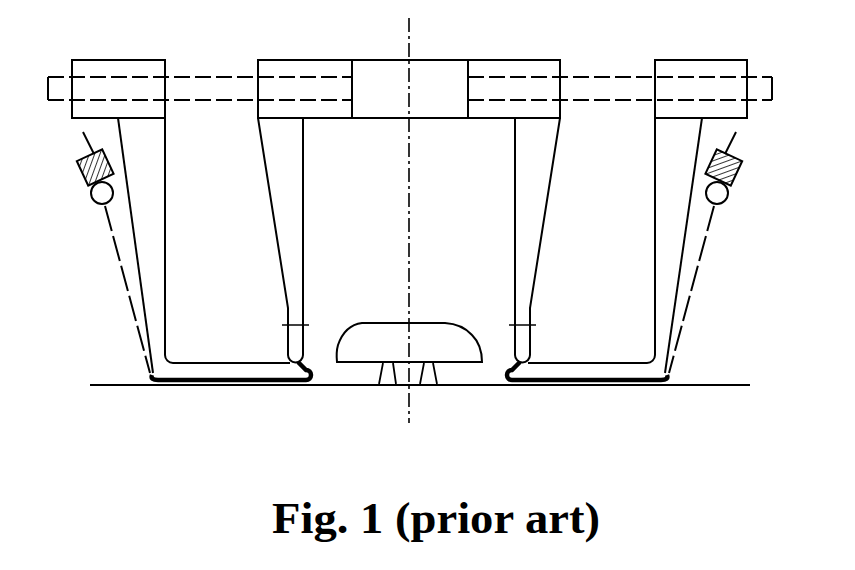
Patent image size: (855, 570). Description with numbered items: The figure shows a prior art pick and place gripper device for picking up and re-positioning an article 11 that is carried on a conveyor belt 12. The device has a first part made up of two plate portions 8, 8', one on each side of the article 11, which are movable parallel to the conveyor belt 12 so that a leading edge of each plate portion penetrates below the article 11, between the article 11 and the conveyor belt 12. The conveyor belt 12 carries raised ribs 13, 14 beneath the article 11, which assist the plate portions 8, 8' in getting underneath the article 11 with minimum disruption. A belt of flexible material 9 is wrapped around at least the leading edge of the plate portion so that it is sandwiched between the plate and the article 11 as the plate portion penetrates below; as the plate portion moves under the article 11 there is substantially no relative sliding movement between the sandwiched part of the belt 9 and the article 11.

The plate portion 8 is at (591, 213).
The plate portion 8' is at (227, 215).
The belt of flexible material 9 is at (512, 385).
The article 11 is at (443, 330).
The conveyor belt 12 is at (725, 385).
The raised rib 13 is at (428, 387).
The raised rib 14 is at (388, 387).